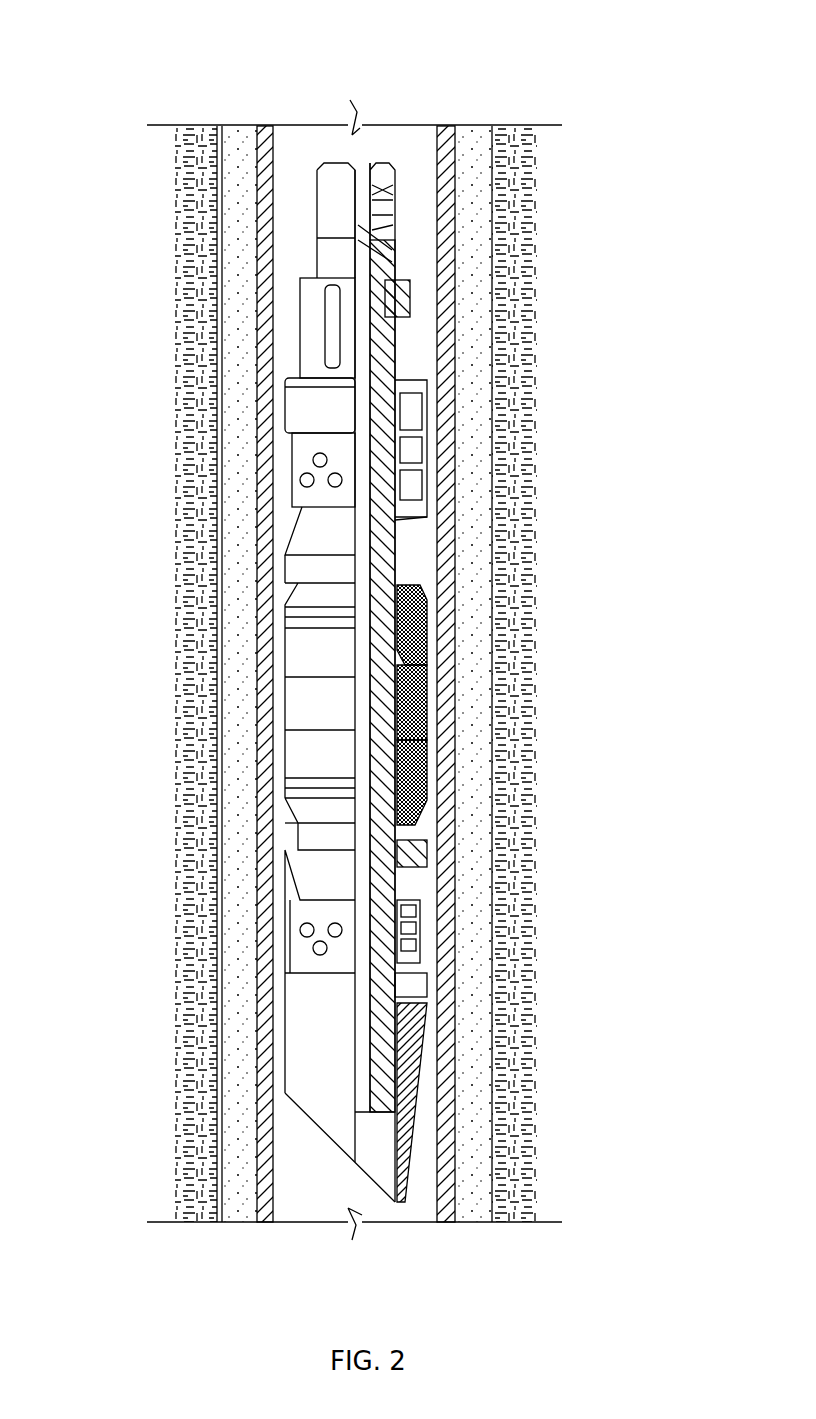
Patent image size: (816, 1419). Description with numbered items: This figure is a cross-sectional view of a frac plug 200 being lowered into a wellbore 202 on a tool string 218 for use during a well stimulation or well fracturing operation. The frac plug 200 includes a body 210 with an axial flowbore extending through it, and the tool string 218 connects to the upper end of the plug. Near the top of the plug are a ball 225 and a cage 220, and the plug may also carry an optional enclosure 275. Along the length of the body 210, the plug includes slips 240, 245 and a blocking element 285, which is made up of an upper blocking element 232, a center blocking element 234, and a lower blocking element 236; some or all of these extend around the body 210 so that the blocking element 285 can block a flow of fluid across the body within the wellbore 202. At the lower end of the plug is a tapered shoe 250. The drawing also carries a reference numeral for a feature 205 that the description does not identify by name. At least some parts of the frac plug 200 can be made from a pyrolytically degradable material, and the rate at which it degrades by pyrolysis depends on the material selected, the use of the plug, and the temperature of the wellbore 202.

The frac plug 200 is at (345, 92).
The wellbore 202 is at (295, 232).
The mandrel 205 is at (362, 525).
The body 210 is at (410, 352).
The tool string 218 is at (368, 140).
The cage 220 is at (358, 232).
The ball 225 is at (360, 205).
The upper blocking element 232 is at (427, 650).
The center blocking element 234 is at (427, 702).
The lower blocking element 236 is at (420, 757).
The slip 240 is at (420, 950).
The slip 245 is at (415, 875).
The tapered shoe 250 is at (420, 1140).
The enclosure 275 is at (340, 318).
The blocking element 285 is at (555, 705).